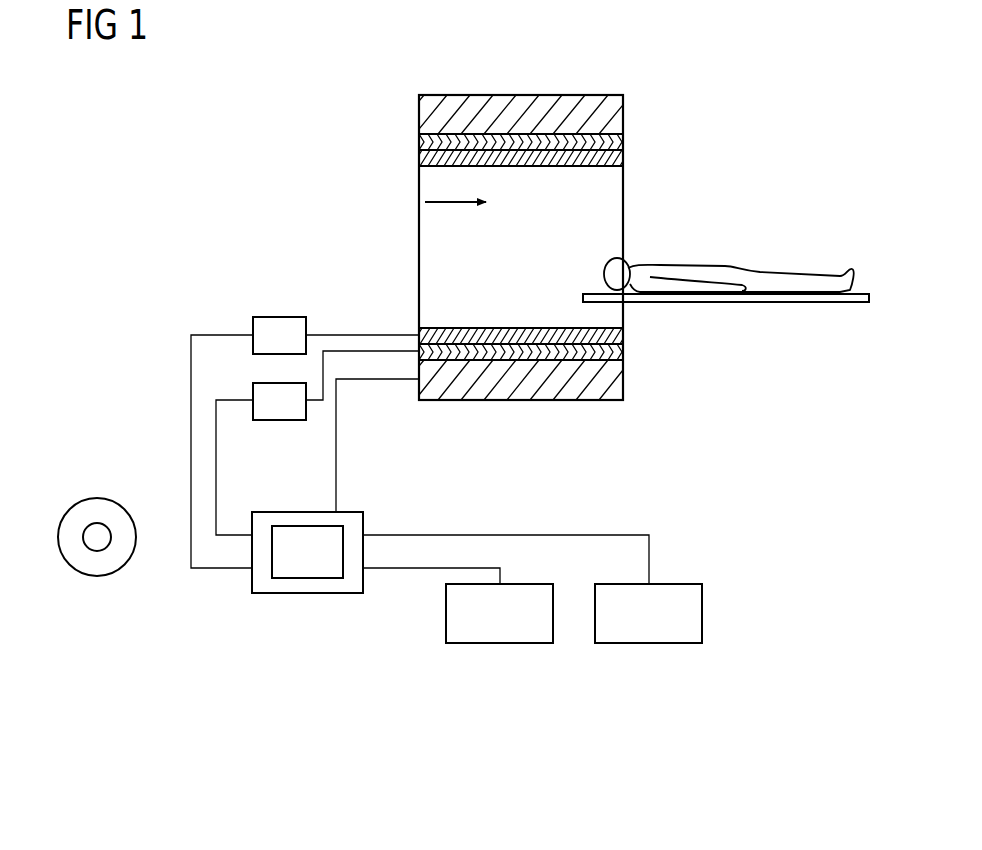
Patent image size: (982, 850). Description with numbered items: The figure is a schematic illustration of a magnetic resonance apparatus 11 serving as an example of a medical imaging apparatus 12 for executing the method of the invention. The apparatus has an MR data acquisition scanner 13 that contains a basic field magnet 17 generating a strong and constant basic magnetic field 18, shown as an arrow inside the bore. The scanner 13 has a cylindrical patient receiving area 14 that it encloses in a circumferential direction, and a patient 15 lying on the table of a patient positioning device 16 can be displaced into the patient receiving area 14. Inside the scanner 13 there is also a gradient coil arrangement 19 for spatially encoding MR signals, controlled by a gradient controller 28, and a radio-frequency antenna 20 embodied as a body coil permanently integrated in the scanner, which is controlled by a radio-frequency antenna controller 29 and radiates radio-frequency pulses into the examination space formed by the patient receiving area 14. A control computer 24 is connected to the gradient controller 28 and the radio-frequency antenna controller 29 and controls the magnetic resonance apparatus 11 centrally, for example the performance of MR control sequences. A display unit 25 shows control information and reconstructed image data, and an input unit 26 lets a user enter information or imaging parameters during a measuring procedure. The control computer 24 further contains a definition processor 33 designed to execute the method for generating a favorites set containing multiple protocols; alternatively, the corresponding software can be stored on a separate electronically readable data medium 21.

The magnetic resonance apparatus 11 is at (745, 144).
The medical imaging device 12 is at (770, 133).
The MR data acquisition scanner 13 is at (400, 100).
The patient receiving area 14 is at (604, 197).
The patient 15 is at (806, 278).
The patient positioning device 16 is at (843, 303).
The basic field magnet 17 is at (616, 118).
The basic magnetic field 18 is at (455, 235).
The gradient coil arrangement 19 is at (426, 142).
The radio-frequency antenna 20 is at (426, 157).
The electronically readable data medium 21 is at (96, 497).
The control computer 24 is at (360, 510).
The display unit 25 is at (445, 612).
The input unit 26 is at (703, 612).
The gradient controller 28 is at (276, 422).
The radio-frequency antenna controller 29 is at (277, 316).
The definition processor 33 is at (307, 592).